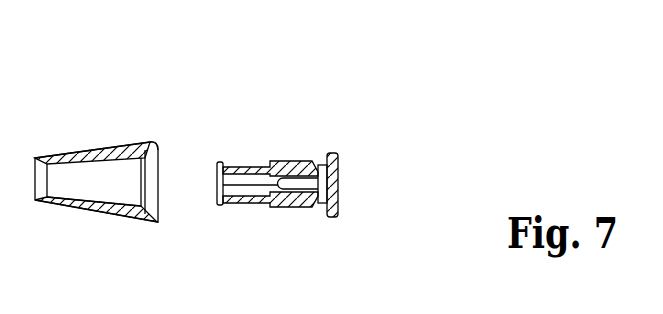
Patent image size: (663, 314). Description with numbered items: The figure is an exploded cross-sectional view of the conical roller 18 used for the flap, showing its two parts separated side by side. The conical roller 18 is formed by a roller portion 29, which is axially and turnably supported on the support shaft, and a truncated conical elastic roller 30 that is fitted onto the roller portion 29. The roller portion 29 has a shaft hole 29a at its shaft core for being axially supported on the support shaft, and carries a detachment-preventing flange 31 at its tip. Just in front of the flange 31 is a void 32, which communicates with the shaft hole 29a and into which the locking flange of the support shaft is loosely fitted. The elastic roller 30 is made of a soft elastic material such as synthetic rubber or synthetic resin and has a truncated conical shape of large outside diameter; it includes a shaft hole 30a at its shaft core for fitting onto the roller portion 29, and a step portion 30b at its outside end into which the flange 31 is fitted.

The conical roller 18 is at (213, 48).
The truncated conical elastic roller 30 is at (82, 150).
The shaft hole 30a is at (113, 202).
The step portion 30b is at (160, 150).
The roller portion 29 is at (268, 165).
The shaft hole 29a is at (263, 190).
The detachment-preventing flange 31 is at (336, 153).
The void 32 is at (321, 206).